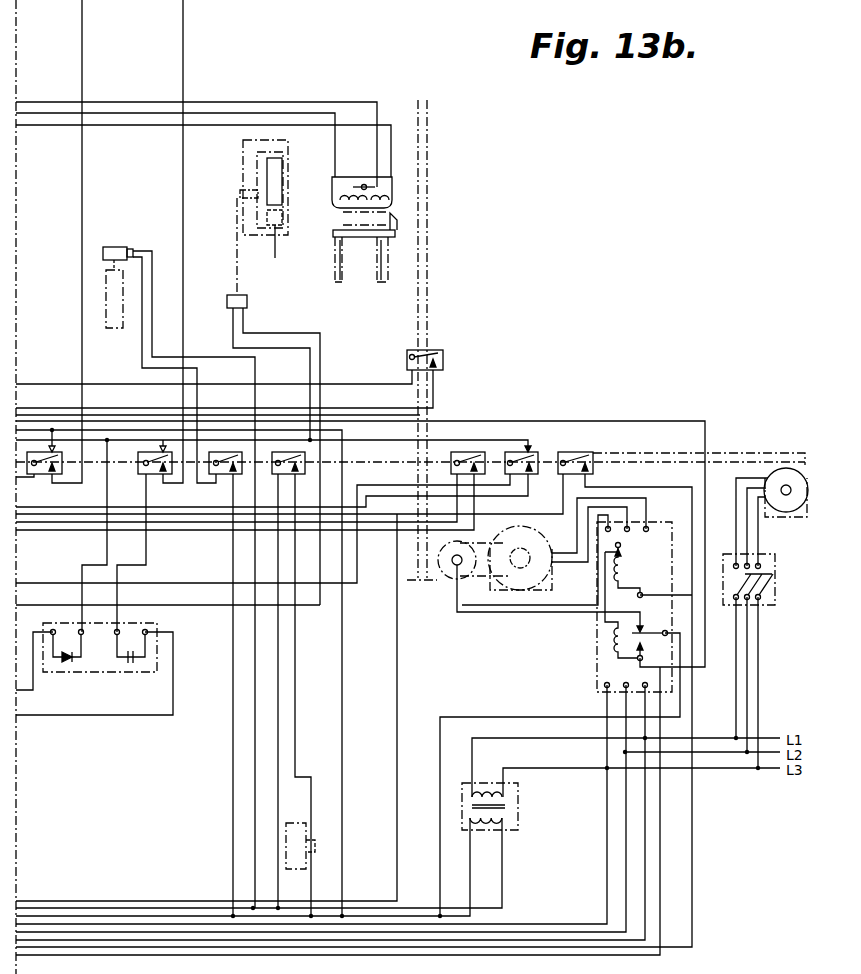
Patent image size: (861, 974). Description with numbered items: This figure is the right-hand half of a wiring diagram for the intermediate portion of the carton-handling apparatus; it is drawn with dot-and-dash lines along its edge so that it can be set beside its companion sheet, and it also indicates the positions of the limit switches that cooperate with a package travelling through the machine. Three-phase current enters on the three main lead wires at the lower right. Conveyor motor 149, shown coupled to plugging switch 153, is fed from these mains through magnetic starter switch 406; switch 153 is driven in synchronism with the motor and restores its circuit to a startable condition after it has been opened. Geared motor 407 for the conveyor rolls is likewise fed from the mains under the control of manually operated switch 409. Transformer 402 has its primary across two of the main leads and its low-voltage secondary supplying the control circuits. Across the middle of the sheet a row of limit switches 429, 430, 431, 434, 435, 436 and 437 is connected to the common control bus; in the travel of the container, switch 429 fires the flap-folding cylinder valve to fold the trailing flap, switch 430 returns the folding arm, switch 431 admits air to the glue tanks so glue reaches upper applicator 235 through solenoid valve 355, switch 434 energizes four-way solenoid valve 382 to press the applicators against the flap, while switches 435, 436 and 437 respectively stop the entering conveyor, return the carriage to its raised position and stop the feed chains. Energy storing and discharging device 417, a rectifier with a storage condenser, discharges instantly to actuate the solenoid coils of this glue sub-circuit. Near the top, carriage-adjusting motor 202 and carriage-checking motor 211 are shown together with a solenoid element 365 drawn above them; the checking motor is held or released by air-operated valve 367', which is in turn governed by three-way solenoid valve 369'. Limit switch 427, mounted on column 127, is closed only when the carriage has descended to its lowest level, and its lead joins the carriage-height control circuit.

The column 127 is at (430, 280).
The electric motor 149 is at (518, 592).
The plugging switch 153 is at (446, 576).
The carriage adjusting motor 202 is at (370, 278).
The carriage checking motor 211 is at (283, 172).
The upper glue applicator 235 is at (104, 300).
The solenoid operated valve 355 is at (114, 247).
The solenoid 365 is at (395, 190).
The air operated valve 367' is at (229, 234).
The three-way solenoid operated valve 369' is at (277, 308).
The four-way solenoid valve 382 is at (290, 853).
The transformer 402 is at (520, 830).
The magnetic starter switch 406 is at (597, 652).
The geared electric motor 407 is at (785, 468).
The manually operated switch 409 is at (770, 607).
The energy storing and discharging circuit device 417 is at (103, 673).
The limit switch 427 is at (443, 352).
The limit switch 429 is at (56, 451).
The limit switch 430 is at (146, 451).
The limit switch 431 is at (217, 451).
The limit switch 434 is at (282, 451).
The limit switch 435 is at (463, 452).
The limit switch 436 is at (510, 452).
The limit switch 437 is at (570, 452).